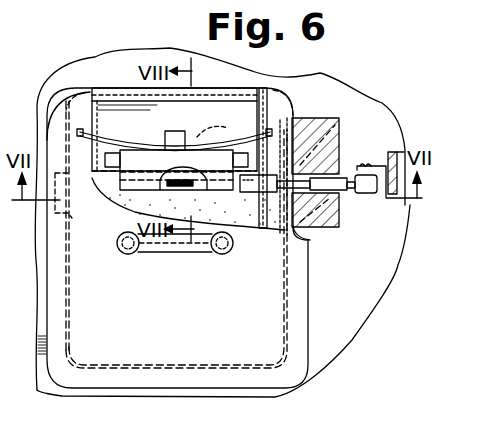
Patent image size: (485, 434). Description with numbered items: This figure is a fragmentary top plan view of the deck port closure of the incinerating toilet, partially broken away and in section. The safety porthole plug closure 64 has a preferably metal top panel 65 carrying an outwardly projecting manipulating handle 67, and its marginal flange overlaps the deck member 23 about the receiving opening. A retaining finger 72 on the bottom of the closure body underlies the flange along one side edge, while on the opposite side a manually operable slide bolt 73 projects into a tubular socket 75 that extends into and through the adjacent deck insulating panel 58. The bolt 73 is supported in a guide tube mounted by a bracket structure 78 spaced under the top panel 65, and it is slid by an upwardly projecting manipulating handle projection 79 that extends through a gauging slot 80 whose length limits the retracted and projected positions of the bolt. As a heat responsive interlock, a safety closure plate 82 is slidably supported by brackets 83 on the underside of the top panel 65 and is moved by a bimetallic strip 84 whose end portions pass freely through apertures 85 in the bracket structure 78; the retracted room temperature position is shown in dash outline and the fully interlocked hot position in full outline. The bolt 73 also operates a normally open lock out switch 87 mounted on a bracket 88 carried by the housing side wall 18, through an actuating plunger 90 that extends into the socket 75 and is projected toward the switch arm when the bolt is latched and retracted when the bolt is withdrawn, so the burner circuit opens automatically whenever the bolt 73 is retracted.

The side wall 18 is at (411, 205).
The deck member 23 is at (352, 312).
The deck insulating panel 58 is at (326, 135).
The safety porthole plug closure 64 is at (60, 387).
The top panel 65 is at (208, 331).
The manipulating handle 67 is at (193, 254).
The retaining finger 72 is at (73, 219).
The slide bolt 73 is at (270, 224).
The tubular socket 75 is at (321, 200).
The bracket structure 78 is at (78, 100).
The manipulating handle projection 79 is at (180, 184).
The gauging slot 80 is at (176, 166).
The safety closure plate 82 is at (146, 160).
The brackets 83 is at (107, 98).
The bimetallic strip 84 is at (204, 145).
The apertures 85 is at (77, 132).
The lock out switch 87 is at (364, 192).
The bracket 88 is at (389, 150).
The actuating plunger 90 is at (366, 166).